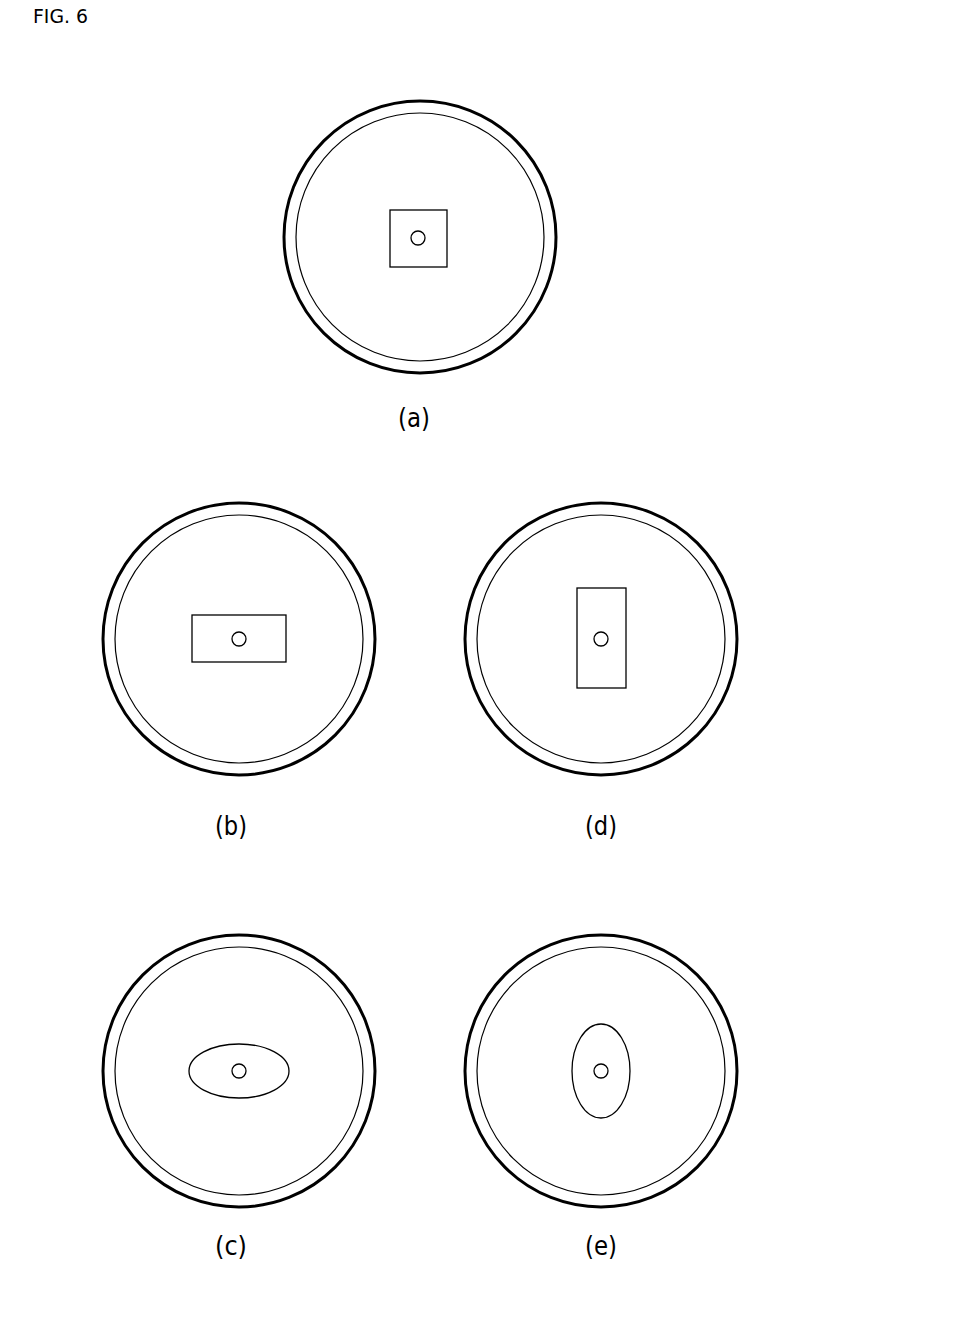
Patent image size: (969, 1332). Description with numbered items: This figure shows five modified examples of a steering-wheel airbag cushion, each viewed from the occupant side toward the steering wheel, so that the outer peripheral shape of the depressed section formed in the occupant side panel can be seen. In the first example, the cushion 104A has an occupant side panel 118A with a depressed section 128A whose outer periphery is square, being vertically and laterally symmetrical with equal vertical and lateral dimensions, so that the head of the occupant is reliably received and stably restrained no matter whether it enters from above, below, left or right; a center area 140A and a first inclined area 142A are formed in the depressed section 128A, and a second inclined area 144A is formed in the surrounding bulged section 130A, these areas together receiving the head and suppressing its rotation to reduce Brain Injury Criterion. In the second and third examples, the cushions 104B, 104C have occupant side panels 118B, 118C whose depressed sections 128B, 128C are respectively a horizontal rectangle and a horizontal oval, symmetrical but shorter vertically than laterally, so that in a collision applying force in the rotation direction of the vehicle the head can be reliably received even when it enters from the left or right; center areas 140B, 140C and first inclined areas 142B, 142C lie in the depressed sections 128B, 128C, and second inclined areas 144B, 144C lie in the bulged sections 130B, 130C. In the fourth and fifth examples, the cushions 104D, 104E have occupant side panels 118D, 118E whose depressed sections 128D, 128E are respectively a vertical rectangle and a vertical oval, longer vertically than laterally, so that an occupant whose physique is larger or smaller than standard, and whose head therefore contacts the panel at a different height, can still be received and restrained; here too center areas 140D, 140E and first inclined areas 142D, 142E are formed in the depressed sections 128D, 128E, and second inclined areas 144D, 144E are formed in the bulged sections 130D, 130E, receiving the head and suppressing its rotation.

The cushion 104A is at (436, 95).
The cushion 104B is at (261, 489).
The cushion 104C is at (261, 924).
The cushion 104D is at (631, 489).
The cushion 104E is at (631, 924).
The occupant side panel 118A is at (496, 167).
The occupant side panel 118B is at (301, 557).
The occupant side panel 118C is at (301, 992).
The occupant side panel 118D is at (669, 557).
The occupant side panel 118E is at (669, 992).
The depressed section 128A is at (437, 235).
The depressed section 128B is at (267, 631).
The depressed section 128C is at (267, 1062).
The depressed section 128D is at (622, 625).
The depressed section 128E is at (622, 1058).
The center area 140A is at (418, 230).
The center area 140B is at (237, 630).
The center area 140C is at (237, 1062).
The center area 140D is at (601, 630).
The center area 140E is at (601, 1062).
The first inclined area 142A is at (415, 262).
The first inclined area 142B is at (230, 653).
The first inclined area 142C is at (230, 1088).
The first inclined area 142D is at (598, 677).
The first inclined area 142E is at (598, 1108).
The bulged section 130A is at (516, 260).
The bulged section 130B is at (343, 652).
The bulged section 130C is at (343, 1086).
The bulged section 130D is at (712, 651).
The bulged section 130E is at (712, 1085).
The second inclined area 144A is at (460, 327).
The second inclined area 144B is at (288, 718).
The second inclined area 144C is at (288, 1153).
The second inclined area 144D is at (655, 717).
The second inclined area 144E is at (655, 1153).